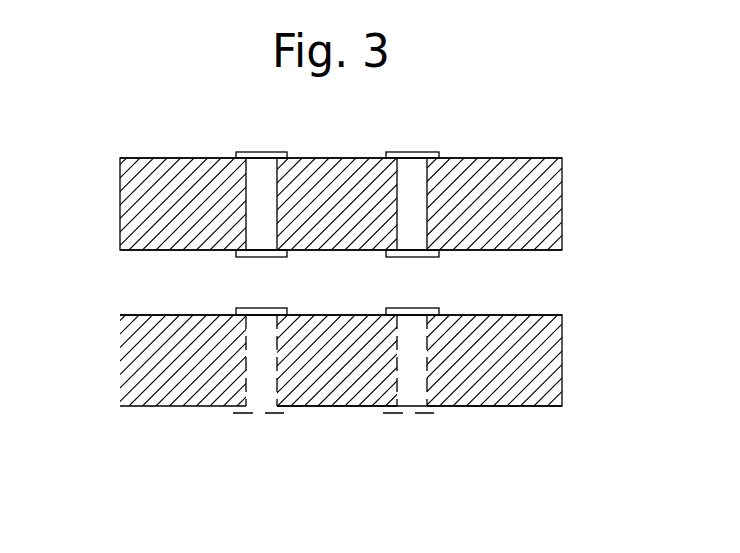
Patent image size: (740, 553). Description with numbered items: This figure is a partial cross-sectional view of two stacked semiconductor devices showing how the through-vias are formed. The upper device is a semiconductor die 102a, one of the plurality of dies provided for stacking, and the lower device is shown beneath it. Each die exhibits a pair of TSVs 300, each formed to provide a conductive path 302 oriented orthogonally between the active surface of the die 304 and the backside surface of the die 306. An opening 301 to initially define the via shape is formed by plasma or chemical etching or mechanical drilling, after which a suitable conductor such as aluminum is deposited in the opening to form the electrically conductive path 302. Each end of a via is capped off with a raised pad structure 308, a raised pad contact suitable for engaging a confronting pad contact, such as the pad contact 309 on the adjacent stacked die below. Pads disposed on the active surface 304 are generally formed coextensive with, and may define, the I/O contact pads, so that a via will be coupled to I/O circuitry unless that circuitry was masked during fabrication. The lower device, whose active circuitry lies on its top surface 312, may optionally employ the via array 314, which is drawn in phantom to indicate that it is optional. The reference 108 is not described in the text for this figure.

The semiconductor die 102a is at (118, 180).
The second substrate 108 is at (120, 358).
The TSV 300 is at (245, 182).
The opening 301 is at (272, 180).
The conductive path 302 is at (263, 205).
The active surface of the die 304 is at (512, 158).
The backside surface of the die 306 is at (528, 255).
The raised pad structure 308 is at (413, 258).
The confronting pad contact 309 is at (413, 307).
The top surface 312 is at (528, 315).
The via array 314 is at (242, 375).